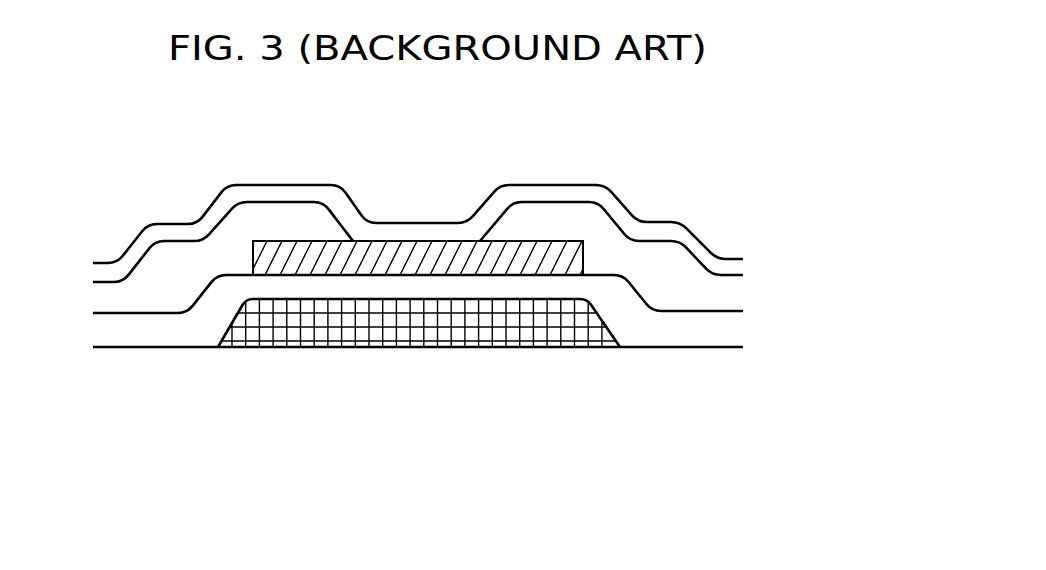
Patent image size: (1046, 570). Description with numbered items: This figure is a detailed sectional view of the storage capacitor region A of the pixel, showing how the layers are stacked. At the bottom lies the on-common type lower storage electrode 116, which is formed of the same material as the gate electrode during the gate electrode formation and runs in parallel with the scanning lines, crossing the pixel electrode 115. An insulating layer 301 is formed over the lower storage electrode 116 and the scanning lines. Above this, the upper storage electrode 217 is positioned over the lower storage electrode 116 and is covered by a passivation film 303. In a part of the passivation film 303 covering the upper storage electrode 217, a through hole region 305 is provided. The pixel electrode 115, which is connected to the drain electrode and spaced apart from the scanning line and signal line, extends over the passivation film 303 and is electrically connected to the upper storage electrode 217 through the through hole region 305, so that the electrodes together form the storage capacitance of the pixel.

The insulating layer 301 is at (682, 333).
The lower storage electrode 116 is at (515, 332).
The passivation film 303 is at (727, 292).
The upper storage electrode 217 is at (563, 243).
The pixel electrode 115 is at (680, 228).
The through hole region 305 is at (393, 223).